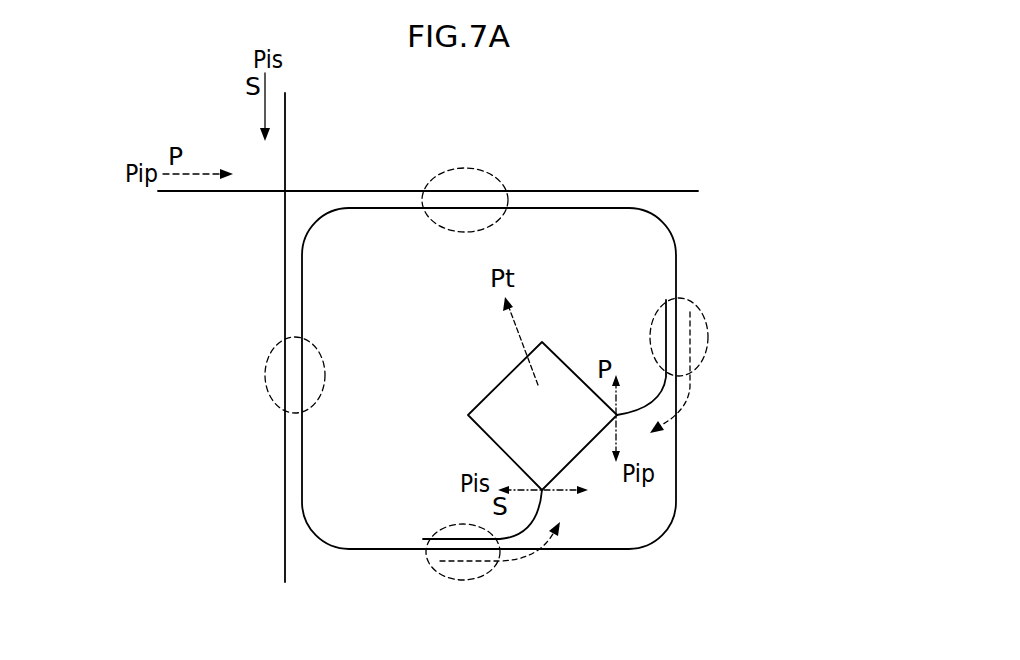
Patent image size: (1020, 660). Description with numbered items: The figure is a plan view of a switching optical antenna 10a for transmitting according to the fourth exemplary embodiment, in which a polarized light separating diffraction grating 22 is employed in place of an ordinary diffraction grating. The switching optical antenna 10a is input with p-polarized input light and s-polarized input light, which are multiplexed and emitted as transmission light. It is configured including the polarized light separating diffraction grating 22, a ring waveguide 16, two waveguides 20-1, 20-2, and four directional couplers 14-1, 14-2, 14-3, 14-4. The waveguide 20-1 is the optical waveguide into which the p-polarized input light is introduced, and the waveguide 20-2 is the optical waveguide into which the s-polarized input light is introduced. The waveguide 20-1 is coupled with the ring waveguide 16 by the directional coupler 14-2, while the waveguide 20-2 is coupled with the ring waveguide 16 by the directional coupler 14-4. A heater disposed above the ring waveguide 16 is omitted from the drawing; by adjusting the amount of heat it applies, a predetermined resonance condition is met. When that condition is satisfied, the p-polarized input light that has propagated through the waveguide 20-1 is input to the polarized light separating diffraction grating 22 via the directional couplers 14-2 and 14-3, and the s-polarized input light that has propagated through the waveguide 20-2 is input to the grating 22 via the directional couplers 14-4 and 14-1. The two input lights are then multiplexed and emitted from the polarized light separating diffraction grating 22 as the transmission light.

The switching optical antenna 10a is at (559, 126).
The directional coupler 14-1 is at (457, 580).
The directional coupler 14-2 is at (466, 168).
The directional coupler 14-3 is at (652, 335).
The directional coupler 14-4 is at (265, 372).
The ring waveguide 16 is at (597, 553).
The waveguide 20-1 is at (205, 195).
The waveguide 20-2 is at (285, 553).
The polarized light separating diffraction grating 22 is at (503, 380).